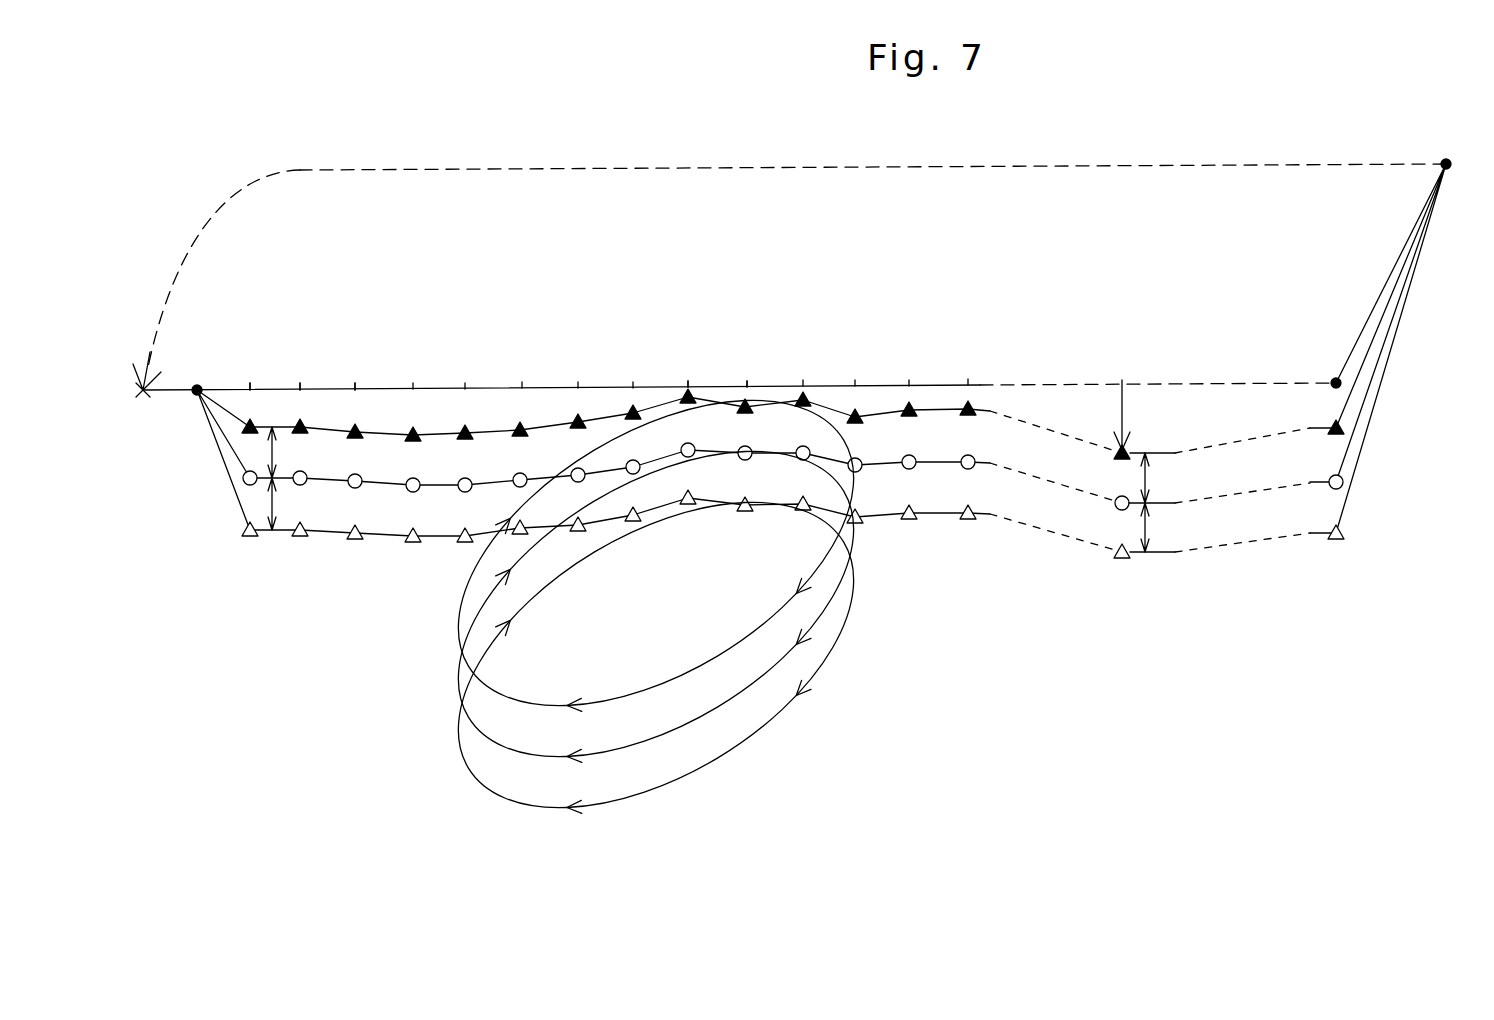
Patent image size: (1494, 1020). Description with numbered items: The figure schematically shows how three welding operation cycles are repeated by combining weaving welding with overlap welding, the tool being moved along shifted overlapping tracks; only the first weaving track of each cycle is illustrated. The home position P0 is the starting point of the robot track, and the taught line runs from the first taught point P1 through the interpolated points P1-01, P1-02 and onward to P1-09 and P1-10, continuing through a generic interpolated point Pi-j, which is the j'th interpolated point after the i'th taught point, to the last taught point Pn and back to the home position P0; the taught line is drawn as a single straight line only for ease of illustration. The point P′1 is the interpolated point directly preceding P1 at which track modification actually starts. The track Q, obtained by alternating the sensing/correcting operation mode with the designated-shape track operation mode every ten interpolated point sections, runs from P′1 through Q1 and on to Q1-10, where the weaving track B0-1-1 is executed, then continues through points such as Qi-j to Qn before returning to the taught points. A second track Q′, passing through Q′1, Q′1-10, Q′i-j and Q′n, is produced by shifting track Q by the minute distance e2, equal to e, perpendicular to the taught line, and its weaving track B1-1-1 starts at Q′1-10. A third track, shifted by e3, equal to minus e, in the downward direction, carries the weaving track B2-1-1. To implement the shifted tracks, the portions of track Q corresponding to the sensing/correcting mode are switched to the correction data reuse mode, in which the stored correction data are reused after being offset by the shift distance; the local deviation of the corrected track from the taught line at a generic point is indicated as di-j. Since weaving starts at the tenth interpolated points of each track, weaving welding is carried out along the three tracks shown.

The home position P0 is at (143, 391).
The interpolated point directly preceding P1 P′1 is at (216, 443).
The first taught point P1 is at (251, 373).
The first interpolated point after P1 P1-01 is at (308, 373).
The second interpolated point after P1 P1-02 is at (367, 373).
The ninth interpolated point after P1 P1-09 is at (693, 370).
The tenth interpolated point after P1 P1-10 is at (753, 370).
The j'th interpolated point after taught point Pi Pi-j is at (1122, 400).
The n'th taught point Pn is at (1326, 370).
The first point of track Q′ Q′1 is at (240, 432).
The first point of track Q Q1 is at (242, 481).
The tenth interpolated point of track Q′ Q′1-10 is at (752, 403).
The tenth interpolated point of track Q Q1-10 is at (742, 460).
The j'th interpolated point of track Q′ after Q′i Q′i-j is at (1112, 455).
The j'th interpolated point of track Q after Qi Qi-j is at (1115, 506).
The n'th point of track Q′ Q′n is at (1346, 428).
The n'th point of track Q Qn is at (1346, 482).
The weaving track of track Q′ B1-1-1 is at (735, 650).
The weaving track of track Q B0-1-1 is at (735, 701).
The weaving track of track Q″ B2-1-1 is at (735, 752).
The shift distance ε2 e2 is at (301, 478).
The shift distance ε3 e3 is at (312, 510).
The shift distance ε e is at (1158, 502).
The deviation delta i-j di-j is at (1147, 414).